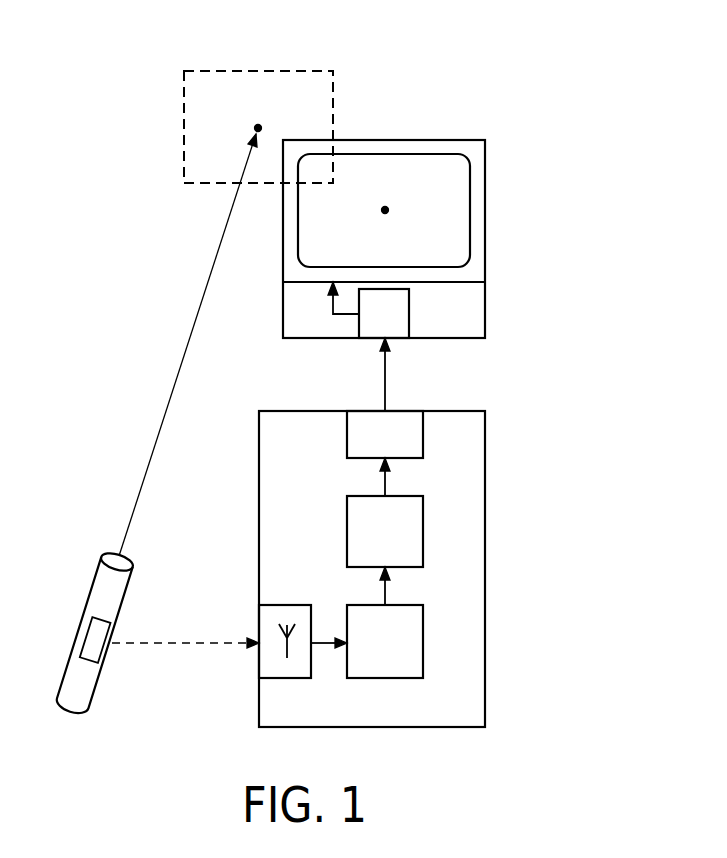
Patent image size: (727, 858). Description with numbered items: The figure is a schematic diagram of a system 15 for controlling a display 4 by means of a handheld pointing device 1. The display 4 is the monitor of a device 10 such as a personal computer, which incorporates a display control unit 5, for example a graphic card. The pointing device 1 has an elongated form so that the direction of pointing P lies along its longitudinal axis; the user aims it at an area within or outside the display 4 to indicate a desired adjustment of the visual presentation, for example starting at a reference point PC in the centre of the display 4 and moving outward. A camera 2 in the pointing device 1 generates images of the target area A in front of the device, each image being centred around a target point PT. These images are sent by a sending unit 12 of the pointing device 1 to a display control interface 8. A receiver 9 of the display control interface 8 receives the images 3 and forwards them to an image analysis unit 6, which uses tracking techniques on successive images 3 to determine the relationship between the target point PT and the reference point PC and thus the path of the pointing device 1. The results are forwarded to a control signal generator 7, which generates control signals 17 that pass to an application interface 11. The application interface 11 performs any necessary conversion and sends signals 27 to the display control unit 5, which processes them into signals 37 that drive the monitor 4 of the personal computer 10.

The pointing device 1 is at (91, 603).
The camera 2 is at (117, 562).
The images 3 is at (325, 643).
The display 4 is at (430, 165).
The display control unit 5 is at (376, 326).
The image analysis unit 6 is at (377, 655).
The control signal generator 7 is at (377, 545).
The display control interface 8 is at (486, 566).
The receiver 9 is at (259, 620).
The device 10 is at (485, 224).
The application interface 11 is at (372, 450).
The sending unit 12 is at (72, 660).
The system 15 is at (538, 112).
The control signals 17 is at (385, 483).
The signals 27 is at (385, 365).
The signals 37 is at (333, 314).
The target area A is at (222, 71).
The direction of pointing P is at (200, 307).
The target point PT is at (254, 127).
The reference point PC is at (388, 214).